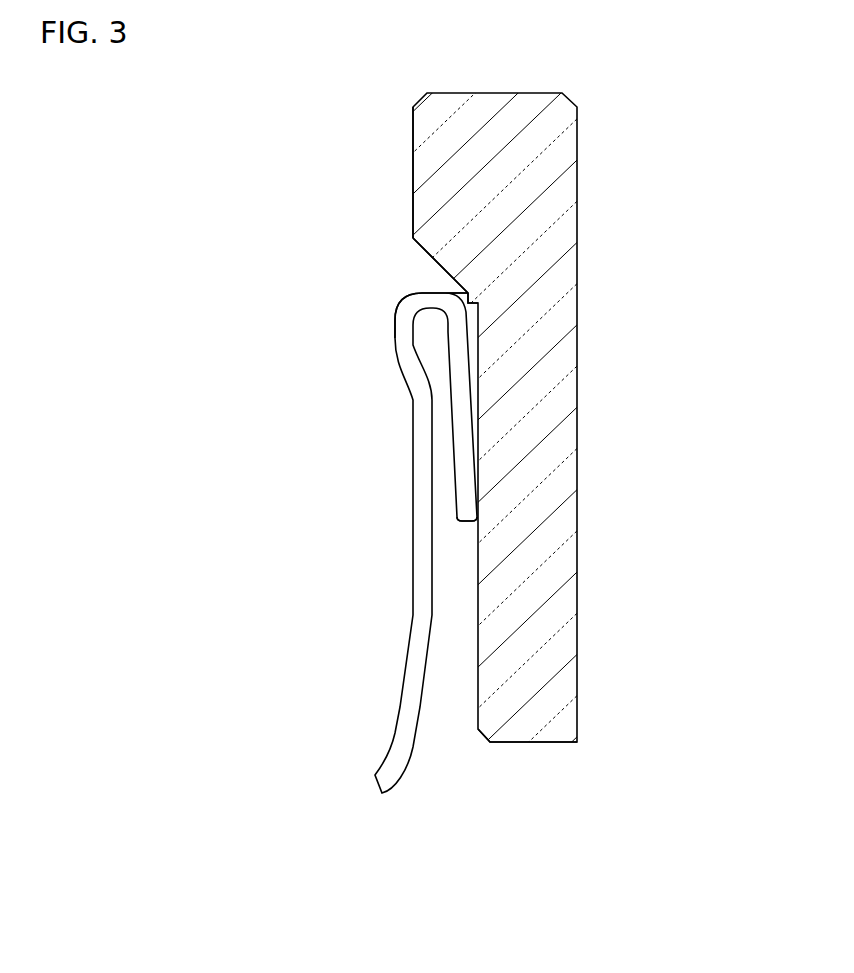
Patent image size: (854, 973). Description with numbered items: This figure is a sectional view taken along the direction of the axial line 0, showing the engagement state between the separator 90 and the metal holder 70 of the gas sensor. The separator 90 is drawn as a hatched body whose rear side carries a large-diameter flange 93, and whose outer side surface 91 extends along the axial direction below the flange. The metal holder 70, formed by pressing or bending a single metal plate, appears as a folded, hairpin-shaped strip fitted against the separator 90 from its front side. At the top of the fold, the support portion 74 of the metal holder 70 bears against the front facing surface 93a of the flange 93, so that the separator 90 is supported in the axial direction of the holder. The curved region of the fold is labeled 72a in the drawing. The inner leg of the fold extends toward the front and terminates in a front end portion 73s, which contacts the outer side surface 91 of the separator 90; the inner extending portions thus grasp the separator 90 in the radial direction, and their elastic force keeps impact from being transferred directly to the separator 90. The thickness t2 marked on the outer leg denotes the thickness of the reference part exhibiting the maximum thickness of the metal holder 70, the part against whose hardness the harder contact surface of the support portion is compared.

The separator 90 is at (607, 147).
The flange 93 is at (433, 168).
The front facing surface 93a is at (420, 253).
The outer side surface 91 is at (476, 705).
The metal holder 70 is at (372, 507).
The support portion 74 is at (448, 288).
The curved portion 72a is at (410, 305).
The front end portion 73s is at (462, 503).
The thickness t2 is at (450, 708).
The axial line 0 is at (635, 713).